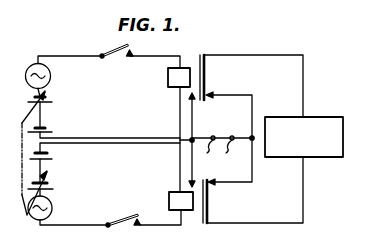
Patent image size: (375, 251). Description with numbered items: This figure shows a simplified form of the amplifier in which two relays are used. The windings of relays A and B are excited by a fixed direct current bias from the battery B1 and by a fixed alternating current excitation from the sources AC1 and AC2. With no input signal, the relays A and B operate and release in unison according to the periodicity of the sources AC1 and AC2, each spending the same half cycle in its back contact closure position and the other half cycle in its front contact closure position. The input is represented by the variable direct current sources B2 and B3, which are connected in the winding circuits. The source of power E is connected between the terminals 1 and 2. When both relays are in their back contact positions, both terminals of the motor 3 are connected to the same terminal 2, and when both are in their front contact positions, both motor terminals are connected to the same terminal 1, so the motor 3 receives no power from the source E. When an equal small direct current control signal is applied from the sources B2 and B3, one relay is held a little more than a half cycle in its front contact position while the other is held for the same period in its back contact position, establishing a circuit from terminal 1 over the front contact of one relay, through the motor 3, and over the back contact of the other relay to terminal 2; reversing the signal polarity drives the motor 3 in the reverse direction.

The alternating current source AC1 is at (58, 76).
The alternating current source AC2 is at (58, 208).
The battery B1 is at (52, 132).
The variable direct current source B2 is at (51, 101).
The variable direct current source B3 is at (55, 188).
The relay A is at (167, 78).
The relay B is at (169, 200).
The source of power E is at (223, 143).
The terminal 1 is at (209, 150).
The terminal 2 is at (231, 150).
The motor 3 is at (317, 117).